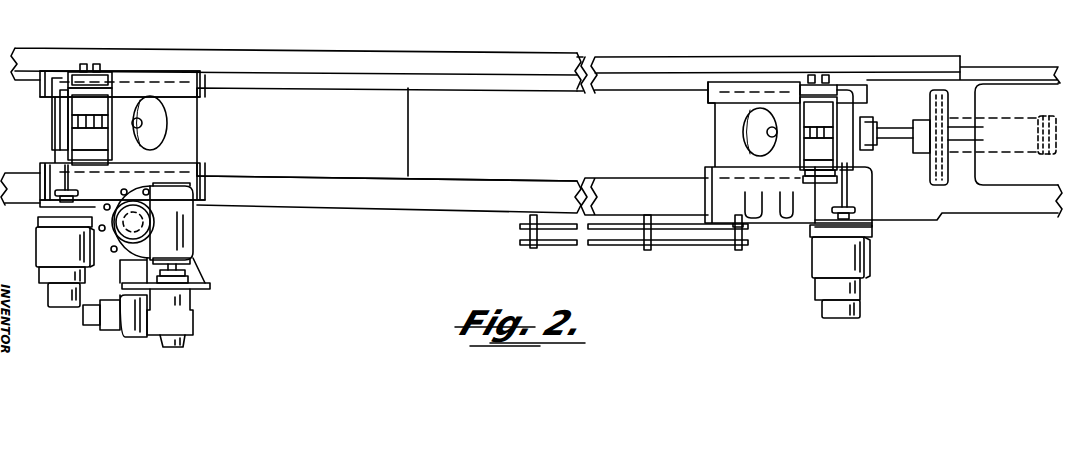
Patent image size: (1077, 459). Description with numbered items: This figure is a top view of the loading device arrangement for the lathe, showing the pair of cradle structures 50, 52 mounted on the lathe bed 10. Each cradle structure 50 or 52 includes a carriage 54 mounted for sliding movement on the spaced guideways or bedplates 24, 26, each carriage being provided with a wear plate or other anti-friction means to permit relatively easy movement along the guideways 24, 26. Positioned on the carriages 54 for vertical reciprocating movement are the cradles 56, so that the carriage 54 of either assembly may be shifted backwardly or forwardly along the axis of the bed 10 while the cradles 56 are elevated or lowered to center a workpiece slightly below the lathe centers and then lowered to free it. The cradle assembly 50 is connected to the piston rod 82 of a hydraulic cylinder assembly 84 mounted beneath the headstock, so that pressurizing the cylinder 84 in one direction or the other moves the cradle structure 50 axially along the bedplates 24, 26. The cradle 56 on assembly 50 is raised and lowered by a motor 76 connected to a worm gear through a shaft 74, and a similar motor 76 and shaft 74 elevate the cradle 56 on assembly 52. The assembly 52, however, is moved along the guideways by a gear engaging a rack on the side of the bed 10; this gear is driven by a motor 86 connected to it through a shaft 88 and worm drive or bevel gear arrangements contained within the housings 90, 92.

The bed 10 is at (352, 158).
The guideway 24 is at (525, 52).
The guideway 26 is at (505, 188).
The cradle structure 50 is at (687, 116).
The cradle structure 52 is at (226, 123).
The carriage 54 is at (750, 80).
The cradle 56 is at (83, 103).
The shaft 74 is at (62, 185).
The motor 76 is at (48, 244).
The piston rod 82 is at (905, 132).
The hydraulic cylinder assembly 84 is at (1004, 125).
The motor 86 is at (125, 335).
The shaft 88 is at (186, 263).
The housing 90 is at (183, 318).
The housing 92 is at (180, 232).